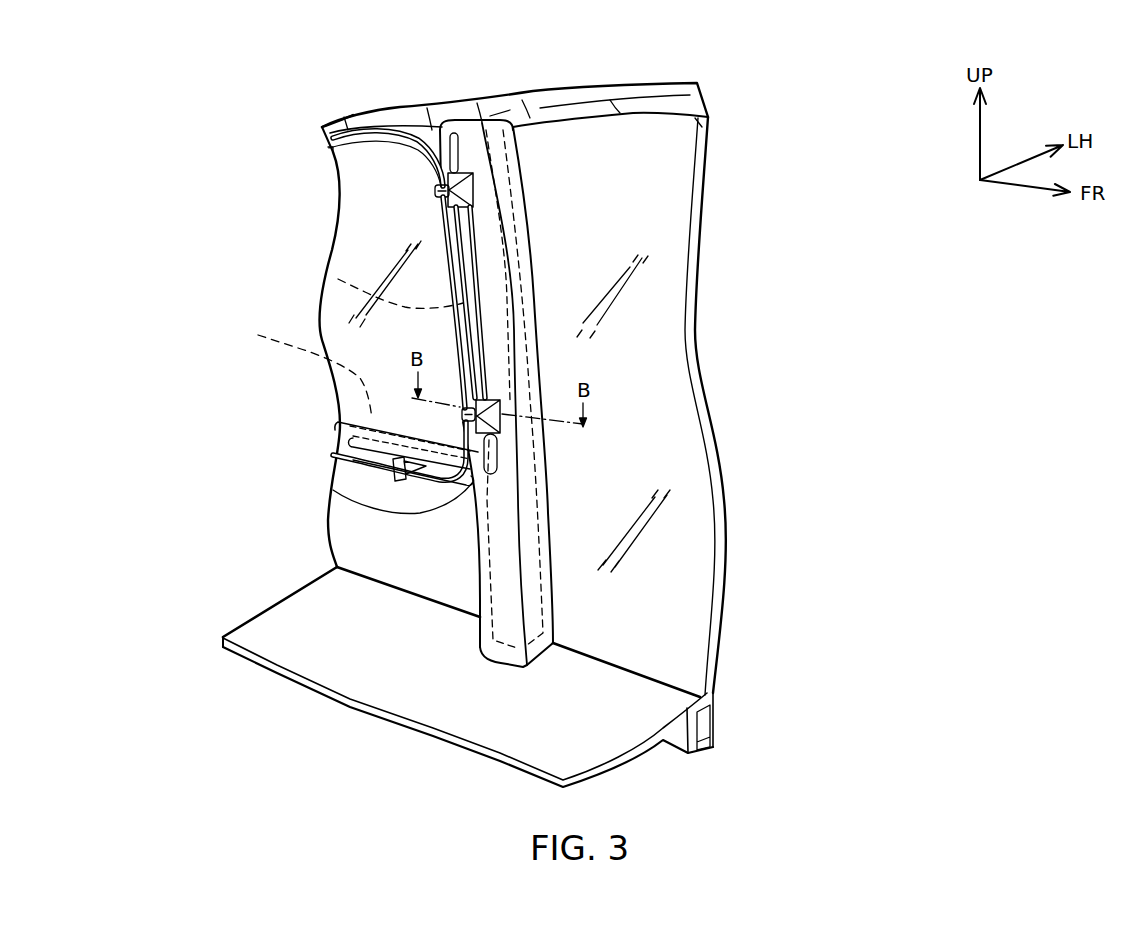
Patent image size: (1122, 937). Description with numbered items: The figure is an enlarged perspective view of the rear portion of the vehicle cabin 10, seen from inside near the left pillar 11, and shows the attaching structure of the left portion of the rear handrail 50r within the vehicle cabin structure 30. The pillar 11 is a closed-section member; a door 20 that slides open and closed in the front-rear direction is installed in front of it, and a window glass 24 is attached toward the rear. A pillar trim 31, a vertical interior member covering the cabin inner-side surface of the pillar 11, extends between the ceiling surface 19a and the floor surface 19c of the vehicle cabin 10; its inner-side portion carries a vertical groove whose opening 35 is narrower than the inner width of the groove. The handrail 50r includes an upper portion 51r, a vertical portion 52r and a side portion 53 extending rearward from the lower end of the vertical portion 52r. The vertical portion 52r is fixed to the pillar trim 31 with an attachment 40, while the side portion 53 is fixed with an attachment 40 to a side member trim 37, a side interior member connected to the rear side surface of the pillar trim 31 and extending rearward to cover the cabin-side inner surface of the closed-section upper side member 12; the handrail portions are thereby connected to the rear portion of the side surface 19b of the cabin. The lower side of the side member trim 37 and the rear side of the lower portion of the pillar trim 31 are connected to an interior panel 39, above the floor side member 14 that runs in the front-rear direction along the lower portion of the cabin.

The vehicle cabin 10 is at (114, 484).
The pillar 11 is at (338, 279).
The upper side member 12 is at (258, 335).
The floor side member 14 is at (714, 724).
The ceiling surface 19a is at (352, 122).
The side surface 19b is at (388, 543).
The floor surface 19c is at (372, 697).
The door 20 is at (707, 152).
The window glass 24 is at (398, 220).
The vehicle cabin structure 30 is at (540, 161).
The pillar trim 31 is at (502, 257).
The opening 35 is at (335, 437).
The side member trim 37 is at (335, 488).
The interior panel 39 is at (342, 527).
The attachment 40 is at (501, 409).
The handrail 50r is at (455, 241).
The upper portion 51r is at (328, 148).
The vertical portion 52r is at (450, 260).
The side portion 53 is at (395, 468).